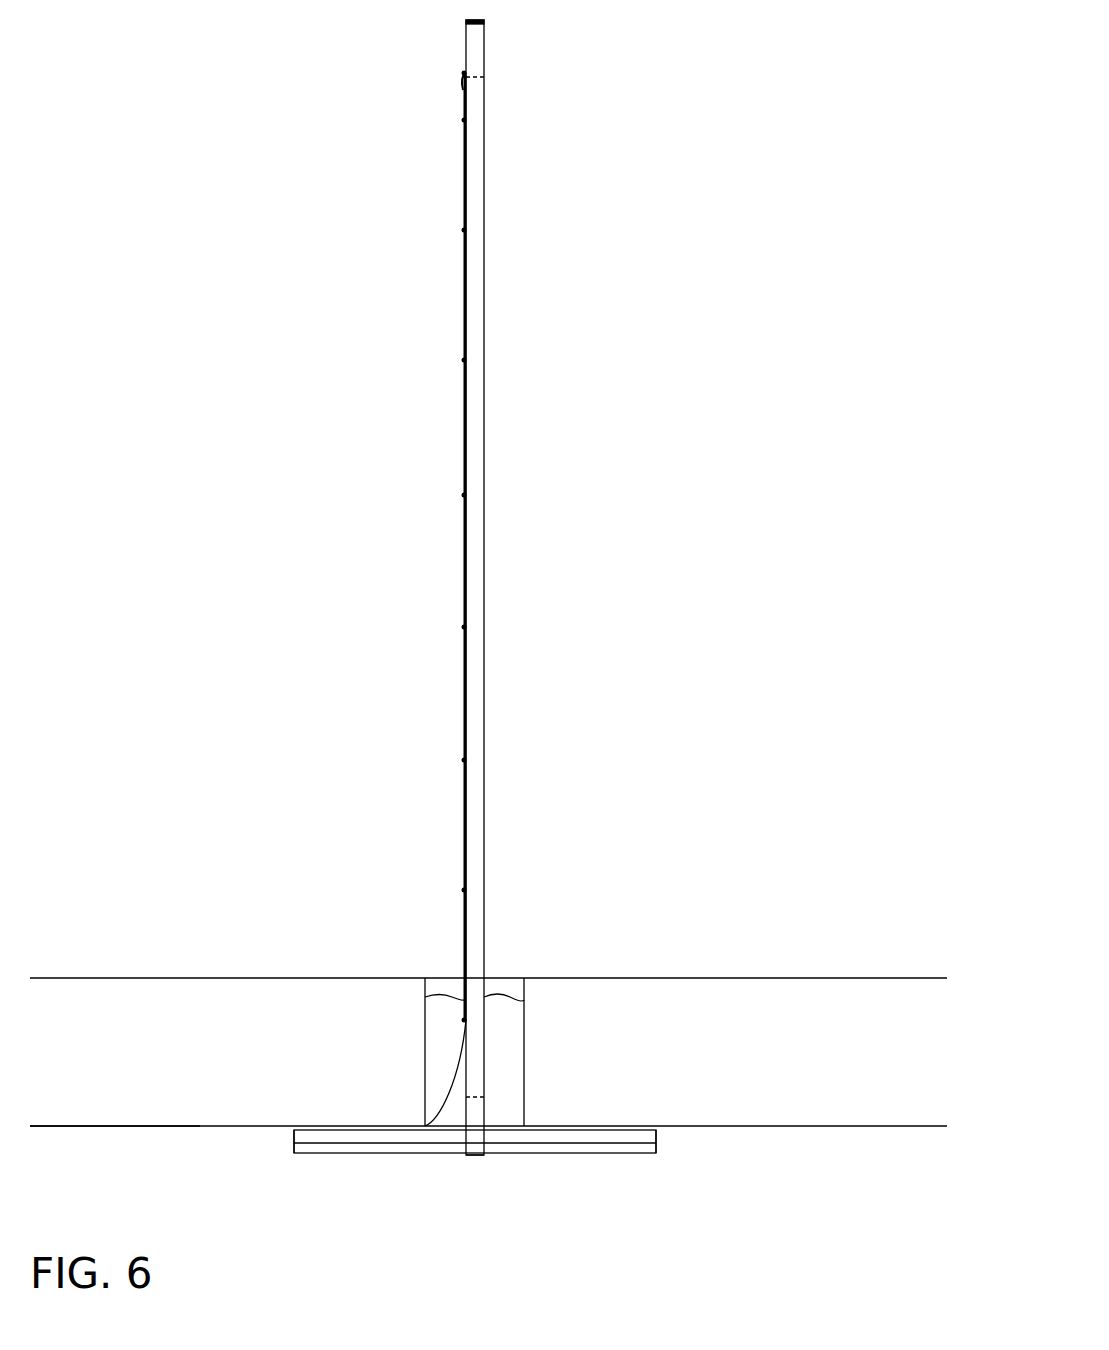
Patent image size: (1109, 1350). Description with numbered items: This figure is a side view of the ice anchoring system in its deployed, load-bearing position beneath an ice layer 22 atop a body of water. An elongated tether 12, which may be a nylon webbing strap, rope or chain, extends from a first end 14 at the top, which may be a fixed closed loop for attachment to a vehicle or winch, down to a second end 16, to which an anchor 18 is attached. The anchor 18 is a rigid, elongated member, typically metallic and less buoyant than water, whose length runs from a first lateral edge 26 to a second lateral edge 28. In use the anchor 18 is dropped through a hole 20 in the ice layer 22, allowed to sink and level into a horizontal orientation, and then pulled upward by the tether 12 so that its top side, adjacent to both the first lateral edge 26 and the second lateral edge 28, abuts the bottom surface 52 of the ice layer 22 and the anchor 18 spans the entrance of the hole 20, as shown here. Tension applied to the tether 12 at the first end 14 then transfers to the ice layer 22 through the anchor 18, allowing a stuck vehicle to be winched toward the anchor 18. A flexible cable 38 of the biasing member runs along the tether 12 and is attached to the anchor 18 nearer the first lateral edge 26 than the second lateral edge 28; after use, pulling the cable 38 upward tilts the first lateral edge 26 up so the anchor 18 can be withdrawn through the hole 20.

The tether 12 is at (484, 568).
The first end 14 is at (484, 22).
The second end 16 is at (480, 1157).
The anchor 18 is at (392, 1156).
The hole 20 is at (500, 980).
The ice layer 22 is at (703, 1005).
The first lateral edge 26 is at (294, 1142).
The second lateral edge 28 is at (656, 1150).
The cable 38 is at (466, 103).
The bottom surface 52 is at (165, 1128).